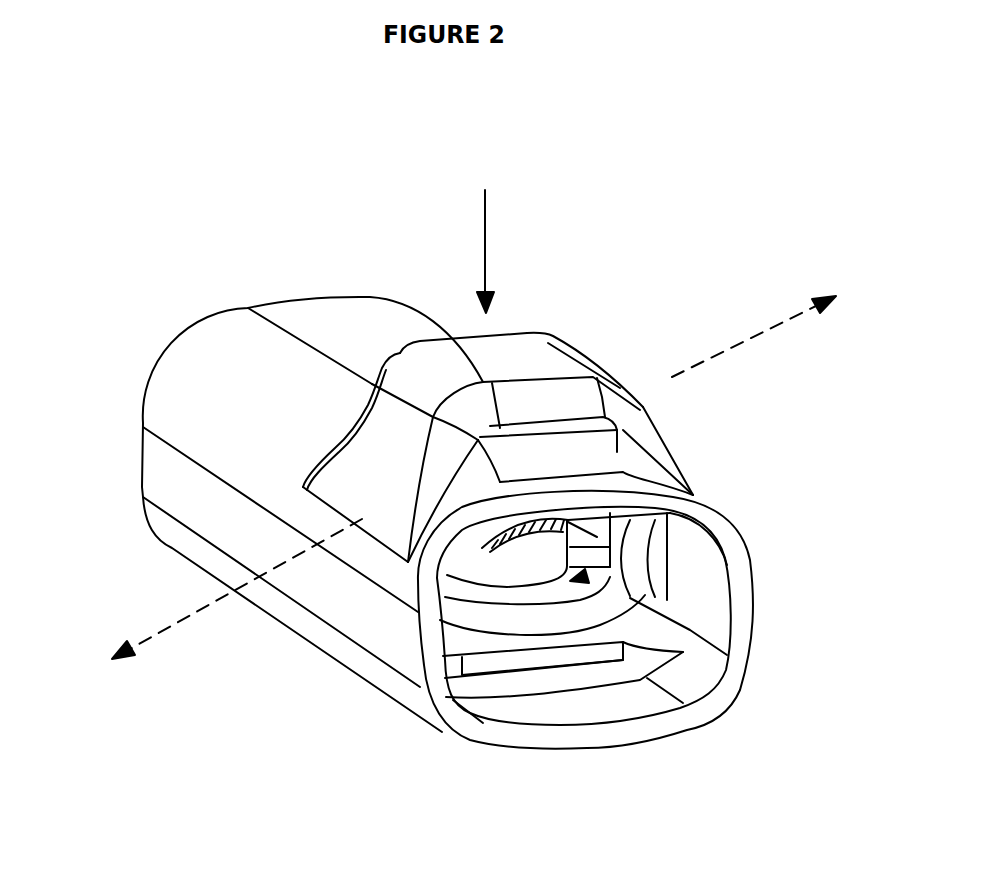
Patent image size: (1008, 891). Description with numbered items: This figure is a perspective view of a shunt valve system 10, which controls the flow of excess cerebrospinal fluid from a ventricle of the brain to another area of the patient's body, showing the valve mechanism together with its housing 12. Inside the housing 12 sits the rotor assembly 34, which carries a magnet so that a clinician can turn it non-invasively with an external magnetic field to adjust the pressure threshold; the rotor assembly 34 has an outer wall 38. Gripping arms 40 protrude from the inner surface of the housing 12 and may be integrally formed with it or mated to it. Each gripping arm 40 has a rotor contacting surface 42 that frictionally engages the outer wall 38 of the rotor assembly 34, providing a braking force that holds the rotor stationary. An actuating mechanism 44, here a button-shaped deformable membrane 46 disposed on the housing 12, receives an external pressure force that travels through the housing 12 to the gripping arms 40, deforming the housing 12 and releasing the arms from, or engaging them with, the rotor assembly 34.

The shunt valve system 10 is at (118, 291).
The housing 12 is at (197, 396).
The rotor assembly 34 is at (587, 578).
The outer wall 38 is at (486, 624).
The gripping arm 40 is at (640, 583).
The rotor contacting surface 42 is at (621, 560).
The actuating mechanism 44 is at (483, 227).
The deformable membrane 46 is at (527, 357).